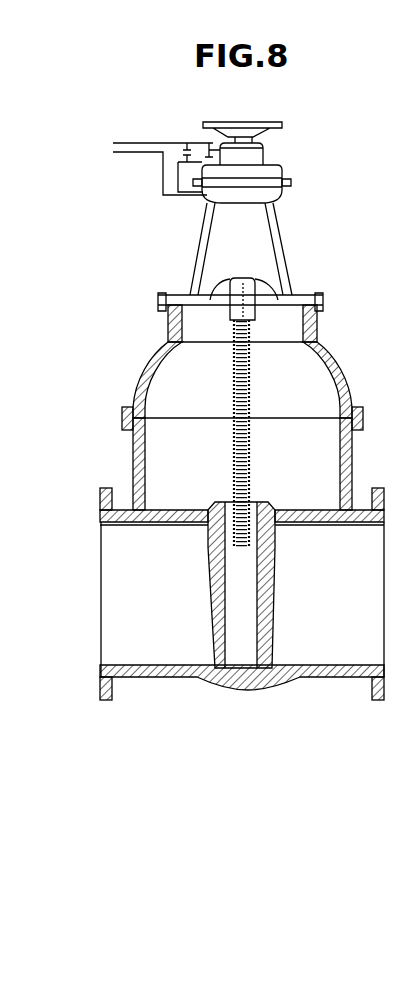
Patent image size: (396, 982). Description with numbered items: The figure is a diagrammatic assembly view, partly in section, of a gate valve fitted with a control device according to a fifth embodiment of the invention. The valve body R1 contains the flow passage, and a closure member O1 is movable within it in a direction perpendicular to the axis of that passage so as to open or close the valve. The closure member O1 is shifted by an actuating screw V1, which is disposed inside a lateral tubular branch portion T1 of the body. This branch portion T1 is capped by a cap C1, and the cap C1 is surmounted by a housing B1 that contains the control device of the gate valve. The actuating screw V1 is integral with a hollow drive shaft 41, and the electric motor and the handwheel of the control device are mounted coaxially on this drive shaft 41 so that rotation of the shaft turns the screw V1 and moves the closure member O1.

The housing B1 is at (271, 171).
The cap C1 is at (149, 362).
The lateral tubular branch portion T1 is at (133, 452).
The actuating screw V1 is at (233, 452).
The closure member O1 is at (222, 603).
The valve body R1 is at (173, 673).
The hollow drive shaft 41 is at (230, 305).